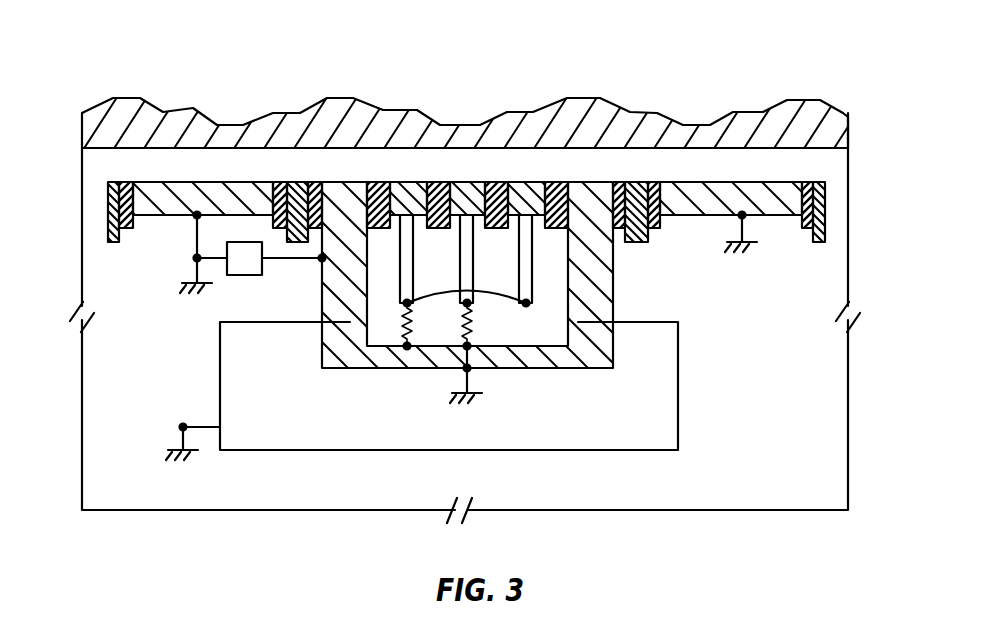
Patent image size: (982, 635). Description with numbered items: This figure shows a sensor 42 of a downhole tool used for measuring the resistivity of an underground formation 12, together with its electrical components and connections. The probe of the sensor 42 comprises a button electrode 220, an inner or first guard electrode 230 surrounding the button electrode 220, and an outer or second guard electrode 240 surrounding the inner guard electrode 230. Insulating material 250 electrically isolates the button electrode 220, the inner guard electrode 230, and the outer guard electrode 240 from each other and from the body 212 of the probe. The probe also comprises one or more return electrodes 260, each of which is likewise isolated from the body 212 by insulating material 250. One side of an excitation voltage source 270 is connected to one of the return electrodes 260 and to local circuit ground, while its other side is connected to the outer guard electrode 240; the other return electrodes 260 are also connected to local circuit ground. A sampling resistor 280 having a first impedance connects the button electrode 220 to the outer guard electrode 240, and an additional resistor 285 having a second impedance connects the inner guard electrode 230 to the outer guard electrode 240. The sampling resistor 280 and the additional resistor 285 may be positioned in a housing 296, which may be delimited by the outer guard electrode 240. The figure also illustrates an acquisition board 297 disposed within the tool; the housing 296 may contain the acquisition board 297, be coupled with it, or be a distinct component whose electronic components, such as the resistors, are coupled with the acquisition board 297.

The formation 12 is at (118, 110).
The sensor 42 is at (206, 162).
The body of the probe 212 is at (295, 182).
The button electrode 220 is at (467, 182).
The inner guard electrode 230 is at (407, 182).
The outer guard electrode 240 is at (335, 182).
The insulating material 250 is at (128, 182).
The return electrodes 260 is at (195, 182).
The excitation voltage source 270 is at (245, 276).
The sampling resistor 280 is at (466, 347).
The additional resistor 285 is at (407, 347).
The housing 296 is at (322, 345).
The acquisition board 297 is at (621, 432).